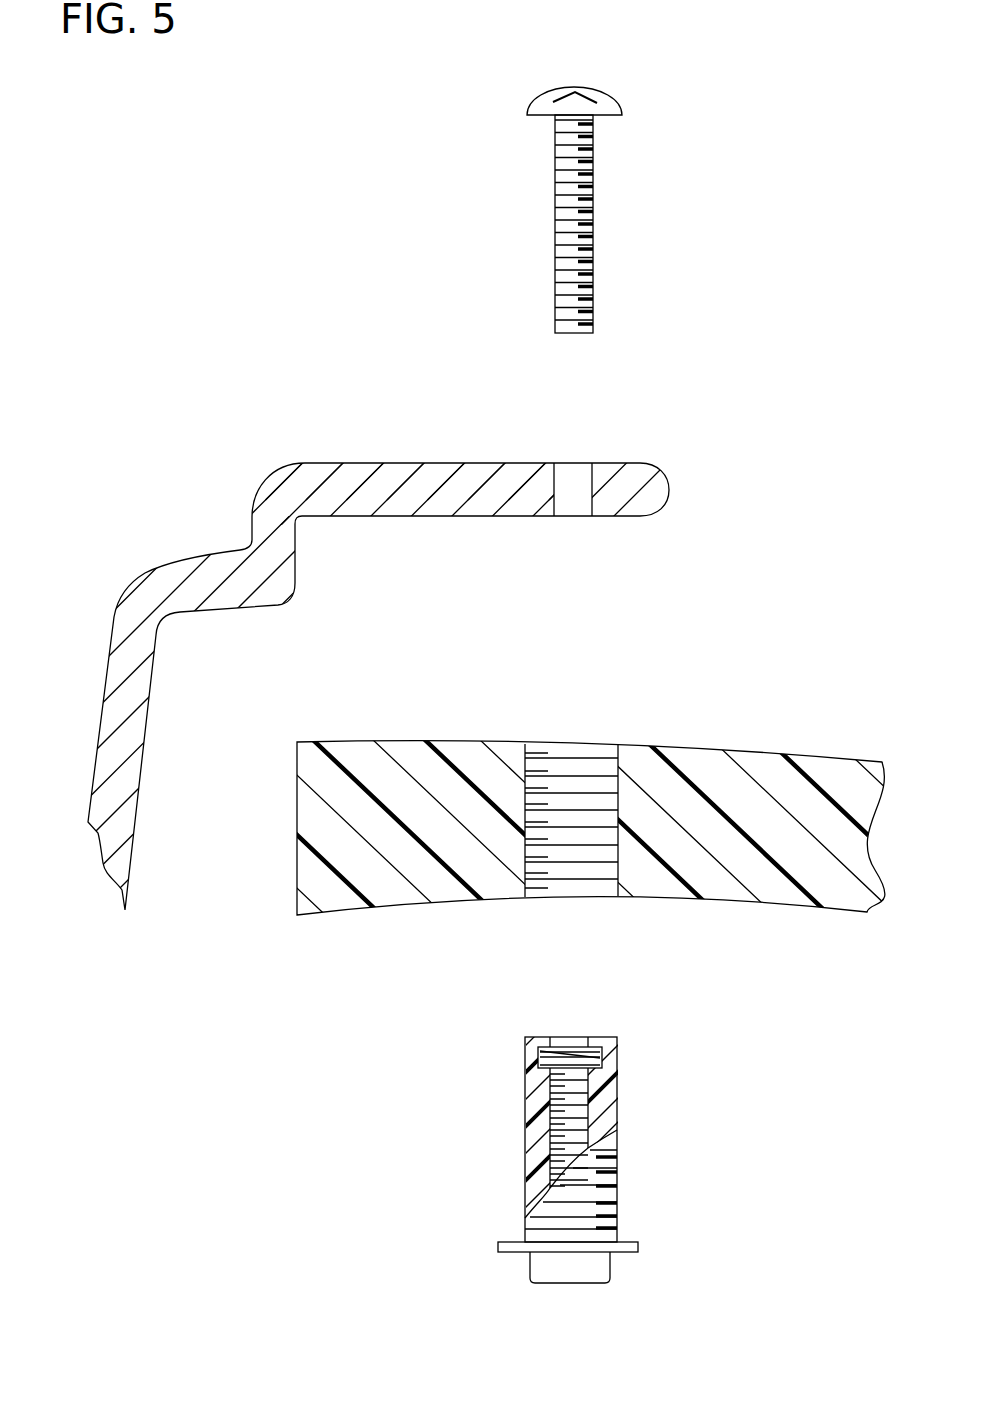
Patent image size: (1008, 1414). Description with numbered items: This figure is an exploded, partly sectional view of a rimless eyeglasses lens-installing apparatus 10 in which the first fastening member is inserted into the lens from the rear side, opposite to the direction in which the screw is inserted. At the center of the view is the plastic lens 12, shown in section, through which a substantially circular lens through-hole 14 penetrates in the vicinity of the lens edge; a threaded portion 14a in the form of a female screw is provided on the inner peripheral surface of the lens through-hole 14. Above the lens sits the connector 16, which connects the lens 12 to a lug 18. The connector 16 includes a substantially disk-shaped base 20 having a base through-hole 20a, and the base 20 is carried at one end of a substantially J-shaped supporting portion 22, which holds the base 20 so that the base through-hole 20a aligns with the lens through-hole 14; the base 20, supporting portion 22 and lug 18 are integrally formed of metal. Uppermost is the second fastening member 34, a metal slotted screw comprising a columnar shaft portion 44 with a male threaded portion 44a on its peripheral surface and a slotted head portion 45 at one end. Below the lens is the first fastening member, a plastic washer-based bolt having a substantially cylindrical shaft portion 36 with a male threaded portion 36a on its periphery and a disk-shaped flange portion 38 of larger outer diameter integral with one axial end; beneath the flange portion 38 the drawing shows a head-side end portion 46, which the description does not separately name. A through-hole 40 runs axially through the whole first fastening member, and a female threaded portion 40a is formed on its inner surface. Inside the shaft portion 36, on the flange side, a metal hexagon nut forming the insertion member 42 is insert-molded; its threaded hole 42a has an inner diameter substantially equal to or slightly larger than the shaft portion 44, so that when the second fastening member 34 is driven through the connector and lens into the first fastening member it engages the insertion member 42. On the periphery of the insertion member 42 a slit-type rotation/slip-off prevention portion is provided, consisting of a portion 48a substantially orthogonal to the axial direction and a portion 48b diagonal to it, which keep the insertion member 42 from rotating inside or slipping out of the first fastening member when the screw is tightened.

The rimless eyeglasses lens-installing apparatus 10 is at (268, 22).
The lens 12 is at (553, 806).
The lens through-hole 14 is at (610, 773).
The threaded portion 14a is at (538, 770).
The connector 16 is at (391, 651).
The lug 18 is at (173, 582).
The base 20 is at (640, 477).
The base through-hole 20a is at (575, 473).
The supporting portion 22 is at (387, 483).
The second fastening member 34 is at (593, 189).
The shaft portion 36 is at (618, 1130).
The threaded portion 36a is at (617, 1177).
The flange portion 38 is at (637, 1250).
The through-hole 40 is at (569, 1111).
The threaded portion 40a is at (557, 1090).
The insertion member 42 is at (617, 1057).
The threaded hole 42a is at (603, 1078).
The shaft portion 44 is at (553, 193).
The threaded portion 44a is at (583, 190).
The slotted head portion 45 is at (545, 105).
The stem 46 is at (545, 1268).
The portion substantially orthogonal to the axial direction 48a is at (593, 1037).
The portion diagonal to the axial direction 48b is at (542, 1064).